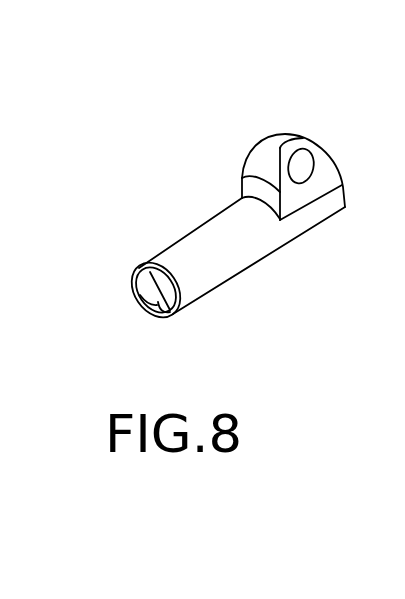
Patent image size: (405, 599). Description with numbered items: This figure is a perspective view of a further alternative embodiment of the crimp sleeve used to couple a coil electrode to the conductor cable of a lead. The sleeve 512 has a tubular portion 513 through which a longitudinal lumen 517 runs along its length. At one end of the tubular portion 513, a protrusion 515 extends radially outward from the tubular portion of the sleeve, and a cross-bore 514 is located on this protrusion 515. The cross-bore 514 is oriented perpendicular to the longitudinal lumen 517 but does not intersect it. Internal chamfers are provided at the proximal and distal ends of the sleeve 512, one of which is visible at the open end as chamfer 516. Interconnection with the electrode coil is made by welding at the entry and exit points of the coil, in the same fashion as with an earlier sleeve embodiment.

The sleeve 512 is at (249, 238).
The tubular portion 513 is at (224, 266).
The cross-bore 514 is at (302, 163).
The protrusion 515 is at (328, 176).
The internal chamfer 516 is at (148, 303).
The longitudinal lumen 517 is at (163, 313).